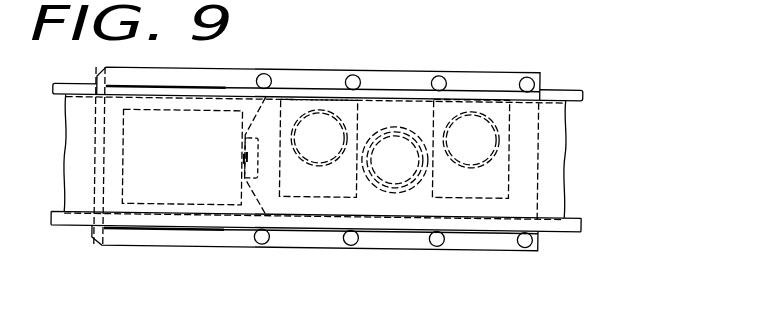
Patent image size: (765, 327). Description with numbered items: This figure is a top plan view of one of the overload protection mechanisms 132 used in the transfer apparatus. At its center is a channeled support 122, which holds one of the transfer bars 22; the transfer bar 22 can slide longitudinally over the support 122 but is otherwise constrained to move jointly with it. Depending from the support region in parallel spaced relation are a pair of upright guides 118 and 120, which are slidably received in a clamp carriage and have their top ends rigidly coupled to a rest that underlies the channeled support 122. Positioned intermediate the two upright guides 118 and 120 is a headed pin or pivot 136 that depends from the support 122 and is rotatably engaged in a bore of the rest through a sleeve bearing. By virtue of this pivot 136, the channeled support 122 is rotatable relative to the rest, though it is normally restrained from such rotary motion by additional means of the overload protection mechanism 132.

The transfer bar 22 is at (558, 133).
The upright guide 118 is at (321, 122).
The upright guide 120 is at (474, 120).
The channeled support 122 is at (293, 240).
The overload protection mechanism 132 is at (424, 62).
The pivot 136 is at (395, 173).